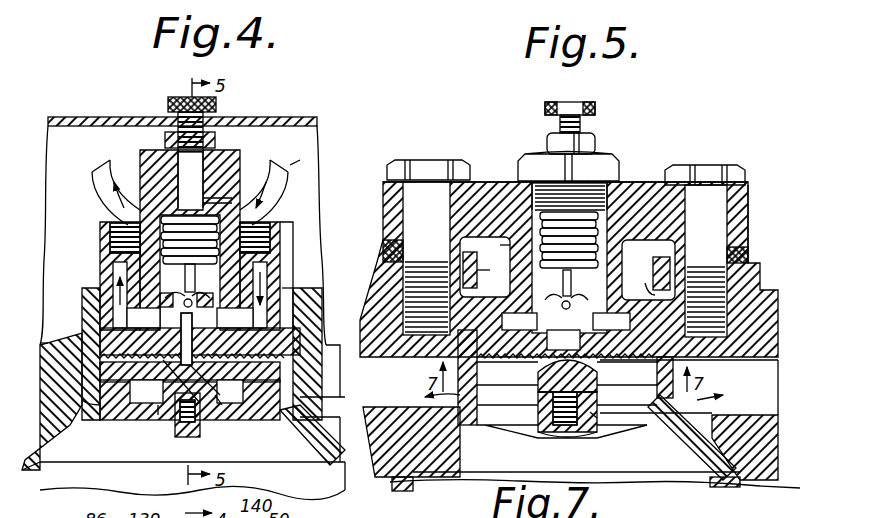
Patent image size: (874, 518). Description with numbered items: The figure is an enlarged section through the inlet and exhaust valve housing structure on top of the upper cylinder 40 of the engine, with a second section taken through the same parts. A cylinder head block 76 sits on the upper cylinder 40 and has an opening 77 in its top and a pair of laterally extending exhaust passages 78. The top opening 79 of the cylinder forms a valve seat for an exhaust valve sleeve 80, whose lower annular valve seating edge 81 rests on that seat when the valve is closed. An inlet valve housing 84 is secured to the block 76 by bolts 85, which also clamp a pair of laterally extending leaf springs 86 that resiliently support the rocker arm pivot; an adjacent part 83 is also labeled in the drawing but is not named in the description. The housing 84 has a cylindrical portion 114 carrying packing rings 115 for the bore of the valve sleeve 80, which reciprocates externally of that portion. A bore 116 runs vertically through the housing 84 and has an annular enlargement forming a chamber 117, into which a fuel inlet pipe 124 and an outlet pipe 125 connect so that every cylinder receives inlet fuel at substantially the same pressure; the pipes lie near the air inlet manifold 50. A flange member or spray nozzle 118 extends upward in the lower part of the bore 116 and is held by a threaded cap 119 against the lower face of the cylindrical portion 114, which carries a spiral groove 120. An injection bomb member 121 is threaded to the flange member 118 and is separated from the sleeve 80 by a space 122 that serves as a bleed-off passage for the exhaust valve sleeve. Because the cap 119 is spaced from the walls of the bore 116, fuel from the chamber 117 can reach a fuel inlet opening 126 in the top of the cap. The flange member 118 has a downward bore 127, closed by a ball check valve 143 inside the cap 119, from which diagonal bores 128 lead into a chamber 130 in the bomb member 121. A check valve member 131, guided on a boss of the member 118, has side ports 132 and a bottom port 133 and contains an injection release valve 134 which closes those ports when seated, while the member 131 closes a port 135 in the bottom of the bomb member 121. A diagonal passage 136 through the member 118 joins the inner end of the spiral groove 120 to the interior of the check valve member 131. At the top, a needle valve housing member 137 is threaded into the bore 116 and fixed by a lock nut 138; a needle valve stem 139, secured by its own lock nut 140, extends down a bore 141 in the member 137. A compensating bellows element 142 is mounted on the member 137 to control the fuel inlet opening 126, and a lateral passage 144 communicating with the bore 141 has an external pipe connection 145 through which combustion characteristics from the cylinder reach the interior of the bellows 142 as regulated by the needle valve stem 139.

In FIG. 4, the upper cylinder 40 is at (312, 480).
In FIG. 5, the upper cylinder 40 is at (697, 487).
In FIG. 4, the air inlet manifold 50 is at (92, 120).
In FIG. 4, the cylinder head block 76 is at (345, 290).
In FIG. 5, the cylinder head block 76 is at (757, 312).
In FIG. 4, the opening 77 is at (327, 285).
In FIG. 5, the opening 77 is at (491, 279).
In FIG. 4, the exhaust passage 78 is at (348, 426).
In FIG. 5, the exhaust passage 78 is at (763, 383).
In FIG. 4, the top opening 79 is at (285, 400).
In FIG. 5, the top opening 79 is at (477, 405).
In FIG. 4, the exhaust valve sleeve 80 is at (320, 262).
In FIG. 5, the exhaust valve sleeve 80 is at (640, 282).
In FIG. 5, the lower annular valve seating edge 81 is at (697, 400).
In FIG. 5, the cap 83 is at (640, 186).
In FIG. 4, the inlet valve housing 84 is at (312, 222).
In FIG. 5, the inlet valve housing 84 is at (660, 183).
In FIG. 5, the bolt 85 is at (430, 165).
In FIG. 5, the leaf spring 86 is at (385, 250).
In FIG. 5, the cylindrical portion 114 is at (645, 365).
In FIG. 4, the packing ring 115 is at (315, 365).
In FIG. 5, the packing ring 115 is at (440, 360).
In FIG. 5, the bore 116 is at (540, 235).
In FIG. 4, the chamber 117 is at (140, 322).
In FIG. 5, the chamber 117 is at (566, 271).
In FIG. 4, the flange member 118 is at (312, 415).
In FIG. 5, the flange member 118 is at (566, 331).
In FIG. 5, the threaded cap 119 is at (567, 268).
In FIG. 4, the spiral groove 120 is at (31, 342).
In FIG. 5, the spiral groove 120 is at (485, 364).
In FIG. 5, the injection bomb member 121 is at (507, 396).
In FIG. 4, the space 122 is at (105, 400).
In FIG. 5, the space 122 is at (660, 398).
In FIG. 4, the fuel inlet pipe 124 is at (300, 162).
In FIG. 4, the outlet pipe 125 is at (100, 170).
In FIG. 4, the fuel inlet opening 126 is at (186, 290).
In FIG. 5, the fuel inlet opening 126 is at (491, 247).
In FIG. 4, the bore 127 is at (140, 327).
In FIG. 4, the diagonal bore 128 is at (222, 398).
In FIG. 5, the diagonal bore 128 is at (660, 415).
In FIG. 4, the chamber 130 is at (83, 400).
In FIG. 5, the check valve member 131 is at (640, 448).
In FIG. 4, the side port 132 is at (255, 430).
In FIG. 5, the side port 132 is at (590, 412).
In FIG. 5, the bottom port 133 is at (560, 435).
In FIG. 4, the injection release valve 134 is at (158, 410).
In FIG. 5, the injection release valve 134 is at (542, 433).
In FIG. 4, the port 135 is at (185, 437).
In FIG. 4, the passage 136 is at (190, 389).
In FIG. 4, the needle valve housing member 137 is at (218, 150).
In FIG. 5, the needle valve housing member 137 is at (598, 158).
In FIG. 4, the lock nut 138 is at (168, 138).
In FIG. 5, the lock nut 138 is at (520, 157).
In FIG. 4, the needle valve stem 139 is at (203, 125).
In FIG. 5, the needle valve stem 139 is at (552, 122).
In FIG. 4, the lock nut 140 is at (170, 128).
In FIG. 5, the lock nut 140 is at (545, 136).
In FIG. 4, the bore 141 is at (235, 165).
In FIG. 4, the compensating bellows element 142 is at (190, 240).
In FIG. 5, the compensating bellows element 142 is at (640, 230).
In FIG. 4, the ball check valve 143 is at (155, 285).
In FIG. 4, the passage 144 is at (265, 165).
In FIG. 4, the pipe connection 145 is at (300, 185).